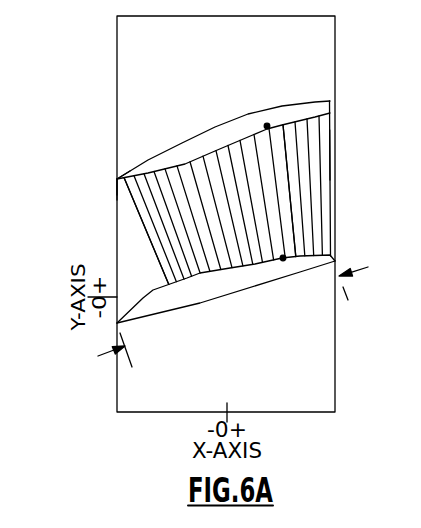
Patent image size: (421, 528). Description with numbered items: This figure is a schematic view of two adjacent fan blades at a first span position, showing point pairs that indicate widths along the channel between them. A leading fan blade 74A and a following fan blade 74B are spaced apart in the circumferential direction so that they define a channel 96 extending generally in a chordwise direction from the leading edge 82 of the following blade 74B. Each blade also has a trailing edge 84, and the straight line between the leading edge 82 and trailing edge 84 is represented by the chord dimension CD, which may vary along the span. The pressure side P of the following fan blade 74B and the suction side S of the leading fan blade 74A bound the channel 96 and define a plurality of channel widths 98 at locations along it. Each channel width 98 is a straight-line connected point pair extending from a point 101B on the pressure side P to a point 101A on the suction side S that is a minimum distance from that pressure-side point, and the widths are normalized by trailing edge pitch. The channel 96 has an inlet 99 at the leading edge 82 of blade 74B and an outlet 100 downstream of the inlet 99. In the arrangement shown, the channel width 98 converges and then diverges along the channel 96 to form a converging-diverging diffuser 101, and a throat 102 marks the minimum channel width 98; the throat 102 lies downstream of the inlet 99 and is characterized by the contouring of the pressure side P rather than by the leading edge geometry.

The leading fan blade 74A is at (206, 312).
The following fan blade 74B is at (245, 99).
The leading edge 82 is at (117, 180).
The trailing edge 84 is at (330, 103).
The channel 96 is at (130, 234).
The channel width 98 is at (280, 100).
The inlet 99 is at (166, 280).
The outlet 100 is at (330, 150).
The converging-diverging diffuser 101 is at (98, 189).
The point on suction side 101A is at (283, 258).
The point on pressure side 101B is at (267, 126).
The throat 102 is at (178, 168).
The pressure side P is at (200, 158).
The suction side S is at (121, 316).
The chord dimension CD is at (98, 356).